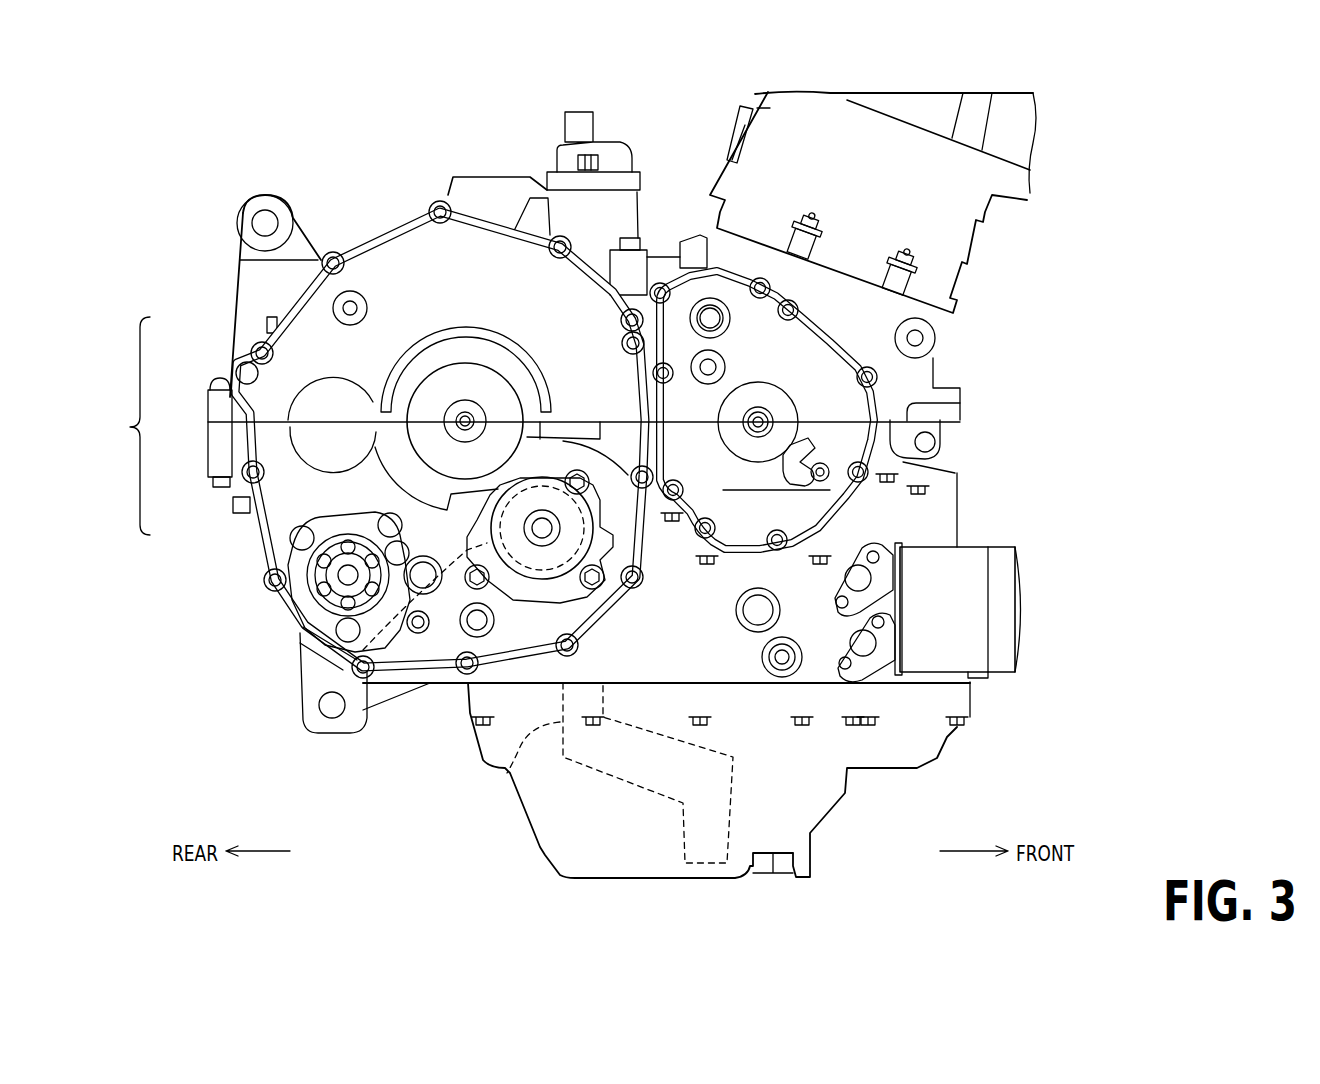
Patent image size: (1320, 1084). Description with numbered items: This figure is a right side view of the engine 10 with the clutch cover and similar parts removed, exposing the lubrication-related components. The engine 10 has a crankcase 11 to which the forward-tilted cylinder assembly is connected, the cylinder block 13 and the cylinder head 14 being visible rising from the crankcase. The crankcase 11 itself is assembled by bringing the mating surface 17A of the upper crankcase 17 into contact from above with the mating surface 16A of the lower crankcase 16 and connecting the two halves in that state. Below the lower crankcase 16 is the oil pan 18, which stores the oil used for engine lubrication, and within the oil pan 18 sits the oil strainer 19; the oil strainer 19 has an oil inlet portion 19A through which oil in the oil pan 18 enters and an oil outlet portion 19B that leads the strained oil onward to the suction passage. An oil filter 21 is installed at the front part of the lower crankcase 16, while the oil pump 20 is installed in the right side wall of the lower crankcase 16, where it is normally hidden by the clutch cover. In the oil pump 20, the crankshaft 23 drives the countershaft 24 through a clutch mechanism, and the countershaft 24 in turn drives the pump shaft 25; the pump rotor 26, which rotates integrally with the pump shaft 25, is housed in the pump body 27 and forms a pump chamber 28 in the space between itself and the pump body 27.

The engine 10 is at (1099, 212).
The crankcase 11 is at (123, 426).
The cylinder block 13 is at (950, 232).
The cylinder head 14 is at (1022, 121).
The lower crankcase 16 is at (281, 522).
The mating surface 16A is at (913, 407).
The upper crankcase 17 is at (248, 328).
The mating surface 17A is at (933, 442).
The oil pan 18 is at (523, 810).
The oil strainer 19 is at (610, 770).
The oil inlet portion 19A is at (685, 805).
The oil outlet portion 19B is at (507, 773).
The oil pump 20 is at (347, 573).
The oil filter 21 is at (1015, 607).
The crankshaft 23 is at (762, 420).
The countershaft 24 is at (463, 412).
The pump shaft 25 is at (542, 537).
The pump rotor 26 is at (333, 668).
The pump body 27 is at (471, 523).
The pump chamber 28 is at (521, 566).